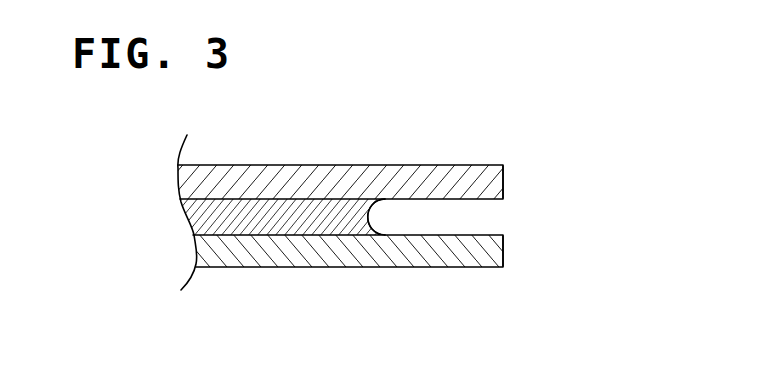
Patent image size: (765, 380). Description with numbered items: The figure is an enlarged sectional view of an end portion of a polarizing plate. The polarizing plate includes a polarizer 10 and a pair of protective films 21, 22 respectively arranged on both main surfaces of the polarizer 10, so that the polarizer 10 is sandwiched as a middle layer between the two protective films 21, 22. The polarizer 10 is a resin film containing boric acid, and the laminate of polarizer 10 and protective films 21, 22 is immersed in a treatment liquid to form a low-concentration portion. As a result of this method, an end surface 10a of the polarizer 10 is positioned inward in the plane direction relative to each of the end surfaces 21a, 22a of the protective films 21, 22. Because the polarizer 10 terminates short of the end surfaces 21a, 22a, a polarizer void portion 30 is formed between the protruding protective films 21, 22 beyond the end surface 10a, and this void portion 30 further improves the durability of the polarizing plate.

The polarizer 10 is at (233, 217).
The end surface of the polarizer 10a is at (369, 217).
The protective film 21 is at (341, 176).
The end surface of the protective film 21a is at (504, 178).
The protective film 22 is at (353, 267).
The end surface of the protective film 22a is at (504, 250).
The polarizer void portion 30 is at (422, 225).